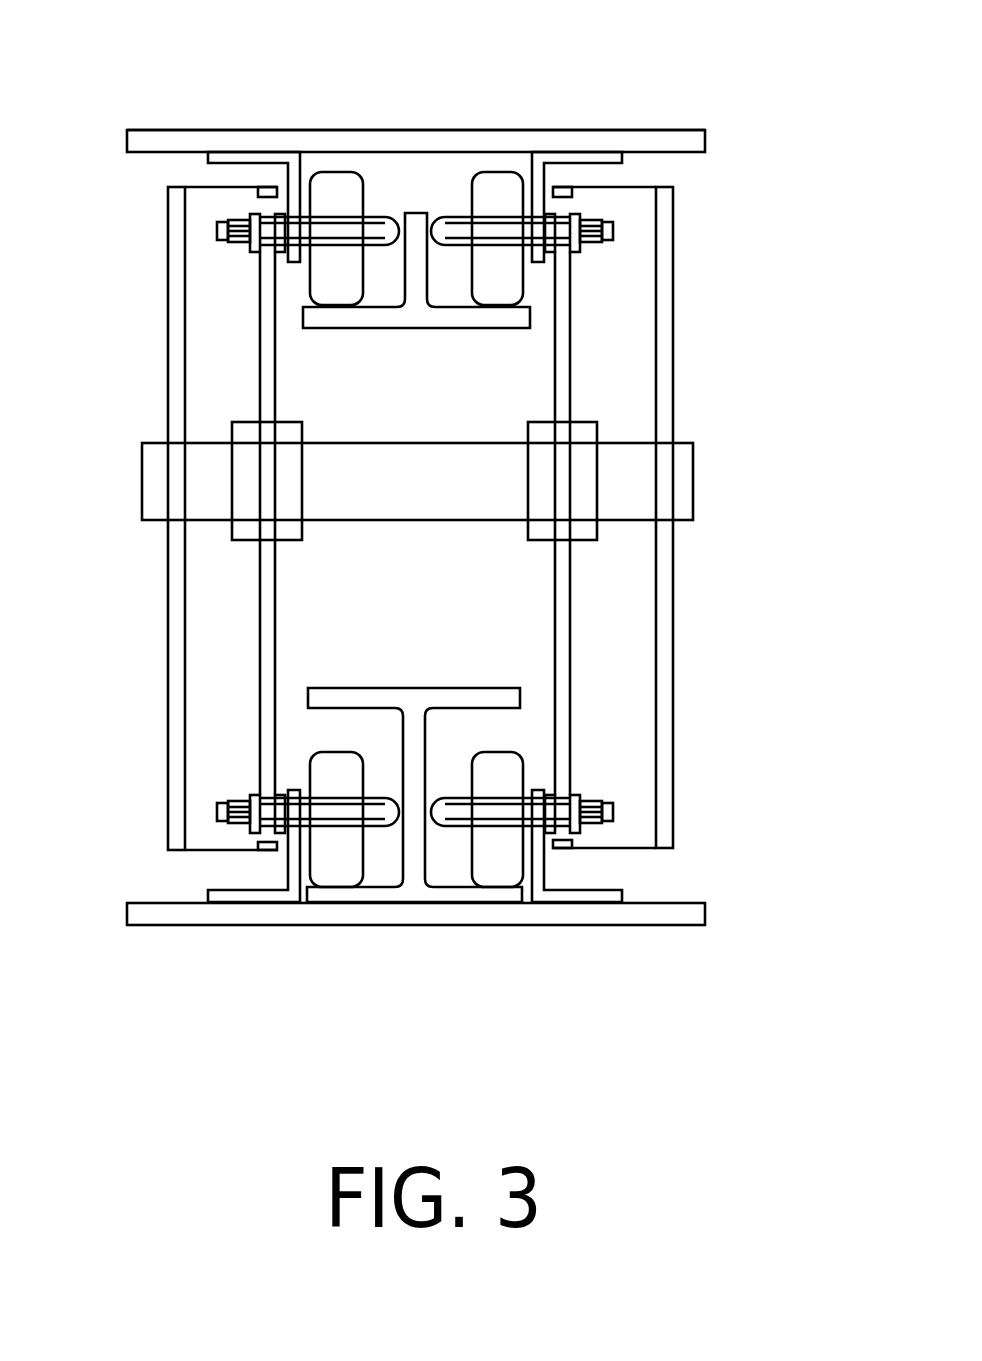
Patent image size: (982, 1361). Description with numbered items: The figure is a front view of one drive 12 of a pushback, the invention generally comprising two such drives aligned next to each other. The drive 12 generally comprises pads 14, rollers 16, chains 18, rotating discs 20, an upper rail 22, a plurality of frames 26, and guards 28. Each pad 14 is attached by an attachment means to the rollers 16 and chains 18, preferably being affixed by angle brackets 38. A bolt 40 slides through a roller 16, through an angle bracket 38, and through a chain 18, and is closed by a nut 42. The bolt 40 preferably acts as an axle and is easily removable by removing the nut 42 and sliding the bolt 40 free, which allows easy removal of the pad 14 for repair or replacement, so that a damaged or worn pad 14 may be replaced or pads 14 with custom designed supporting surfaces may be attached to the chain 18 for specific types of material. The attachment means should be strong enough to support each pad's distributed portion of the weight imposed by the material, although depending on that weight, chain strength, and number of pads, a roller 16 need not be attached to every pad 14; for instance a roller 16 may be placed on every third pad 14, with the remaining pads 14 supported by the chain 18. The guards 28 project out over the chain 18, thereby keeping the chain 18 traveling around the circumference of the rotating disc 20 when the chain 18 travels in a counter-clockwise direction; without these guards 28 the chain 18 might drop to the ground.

The drive 12 is at (812, 273).
The pad 14 is at (363, 140).
The roller 16 is at (493, 278).
The chain 18 is at (262, 210).
The rotating disc 20 is at (253, 640).
The upper rail 22 is at (407, 332).
The frame 26 is at (447, 129).
The guard 28 is at (160, 344).
The angle bracket 38 is at (250, 154).
The bolt 40 is at (392, 833).
The nut 42 is at (241, 793).